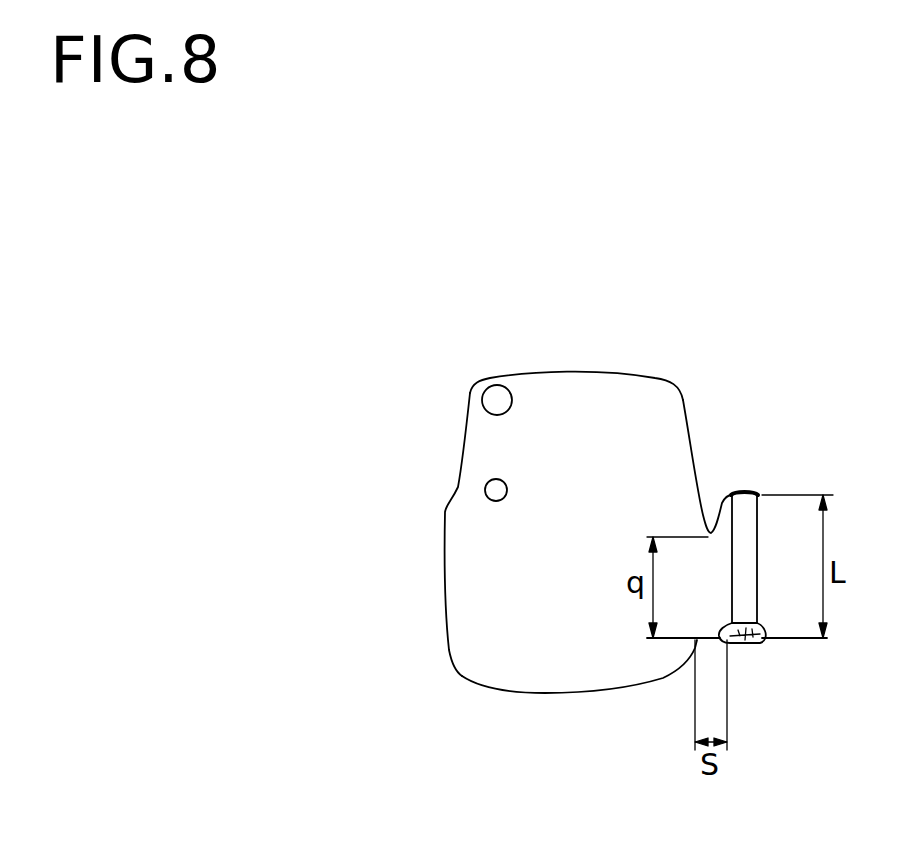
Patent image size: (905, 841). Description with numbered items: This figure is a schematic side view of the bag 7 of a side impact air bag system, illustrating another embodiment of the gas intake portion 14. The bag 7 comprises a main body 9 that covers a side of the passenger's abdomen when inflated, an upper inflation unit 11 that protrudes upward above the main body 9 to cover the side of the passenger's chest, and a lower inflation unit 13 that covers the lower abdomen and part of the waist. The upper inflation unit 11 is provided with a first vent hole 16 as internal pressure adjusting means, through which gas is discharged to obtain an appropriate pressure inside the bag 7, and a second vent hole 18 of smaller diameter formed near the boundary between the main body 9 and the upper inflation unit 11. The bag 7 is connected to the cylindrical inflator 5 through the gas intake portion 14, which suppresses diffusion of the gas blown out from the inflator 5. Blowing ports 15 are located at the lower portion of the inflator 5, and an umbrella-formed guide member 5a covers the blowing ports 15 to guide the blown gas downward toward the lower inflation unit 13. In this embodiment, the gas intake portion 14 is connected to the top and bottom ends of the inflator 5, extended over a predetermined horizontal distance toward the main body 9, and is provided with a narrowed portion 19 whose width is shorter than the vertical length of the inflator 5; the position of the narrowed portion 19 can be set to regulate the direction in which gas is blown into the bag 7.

The inflator 5 is at (745, 510).
The guide member 5a is at (760, 623).
The bag 7 is at (413, 603).
The main body 9 is at (473, 538).
The upper inflation unit 11 is at (570, 383).
The lower inflation unit 13 is at (560, 680).
The gas intake portion 14 is at (718, 640).
The blowing ports 15 is at (753, 643).
The first vent hole 16 is at (492, 390).
The second vent hole 18 is at (490, 490).
The narrowed portion 19 is at (708, 523).